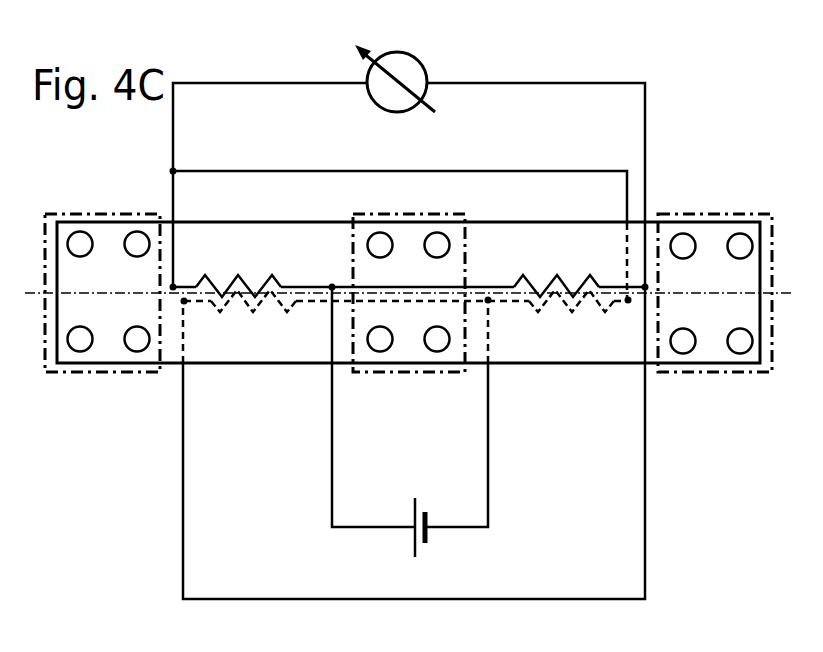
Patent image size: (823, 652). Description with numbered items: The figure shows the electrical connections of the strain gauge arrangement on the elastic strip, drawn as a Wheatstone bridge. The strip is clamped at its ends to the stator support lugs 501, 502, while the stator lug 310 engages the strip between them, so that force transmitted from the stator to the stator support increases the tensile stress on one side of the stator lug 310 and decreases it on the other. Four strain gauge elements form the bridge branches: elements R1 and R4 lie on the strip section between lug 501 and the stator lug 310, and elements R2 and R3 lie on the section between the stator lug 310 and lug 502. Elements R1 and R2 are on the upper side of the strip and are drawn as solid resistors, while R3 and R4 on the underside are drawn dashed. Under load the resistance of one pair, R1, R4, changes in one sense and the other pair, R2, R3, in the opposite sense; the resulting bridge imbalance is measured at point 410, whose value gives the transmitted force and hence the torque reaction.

The measurement point 410 is at (425, 70).
The strain gauge element R1 is at (248, 280).
The strain gauge element R2 is at (535, 283).
The strain gauge element R3 is at (570, 312).
The strain gauge element R4 is at (253, 305).
The stator lug 310 is at (463, 370).
The stator support lug 501 is at (100, 376).
The stator support lug 502 is at (727, 376).